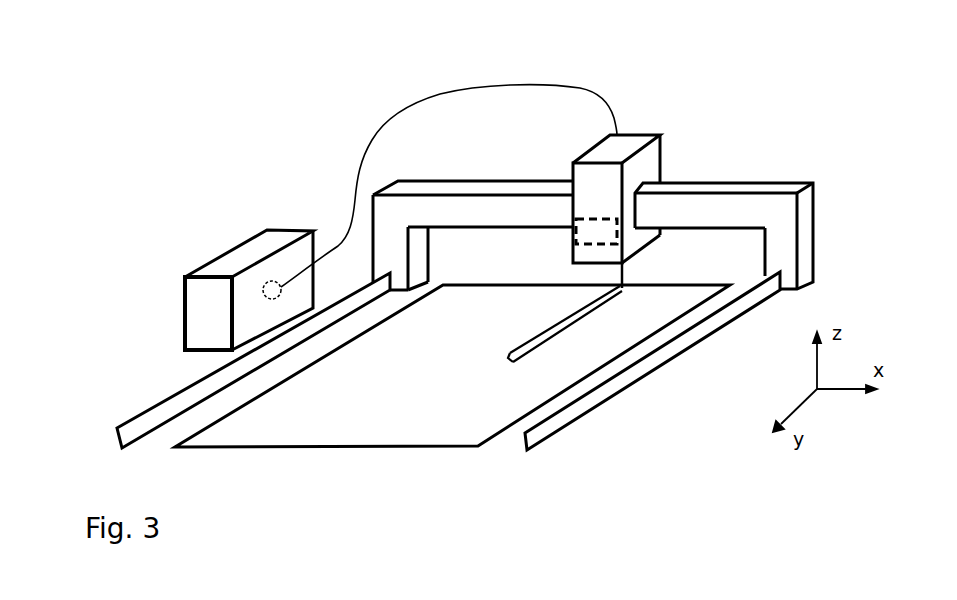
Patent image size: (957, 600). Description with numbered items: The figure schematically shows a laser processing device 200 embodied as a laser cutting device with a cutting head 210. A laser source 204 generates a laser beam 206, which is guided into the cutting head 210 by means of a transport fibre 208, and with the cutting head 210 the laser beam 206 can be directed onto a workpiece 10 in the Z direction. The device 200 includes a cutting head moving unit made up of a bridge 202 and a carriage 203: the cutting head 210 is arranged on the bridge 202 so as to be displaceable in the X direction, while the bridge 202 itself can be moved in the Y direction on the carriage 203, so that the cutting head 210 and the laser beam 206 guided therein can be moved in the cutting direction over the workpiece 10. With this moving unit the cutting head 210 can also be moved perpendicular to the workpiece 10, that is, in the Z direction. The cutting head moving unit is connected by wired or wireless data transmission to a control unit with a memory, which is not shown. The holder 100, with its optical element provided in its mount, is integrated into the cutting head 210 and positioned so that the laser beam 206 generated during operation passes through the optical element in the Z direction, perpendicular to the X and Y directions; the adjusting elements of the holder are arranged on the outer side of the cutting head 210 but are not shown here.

The workpiece 10 is at (420, 448).
The holder 100 is at (622, 226).
The laser processing device 200 is at (654, 476).
The bridge 202 is at (820, 202).
The carriage 203 is at (660, 370).
The laser source 204 is at (240, 260).
The laser beam 206 is at (622, 270).
The transport fibre 208 is at (612, 105).
The cutting head 210 is at (597, 138).